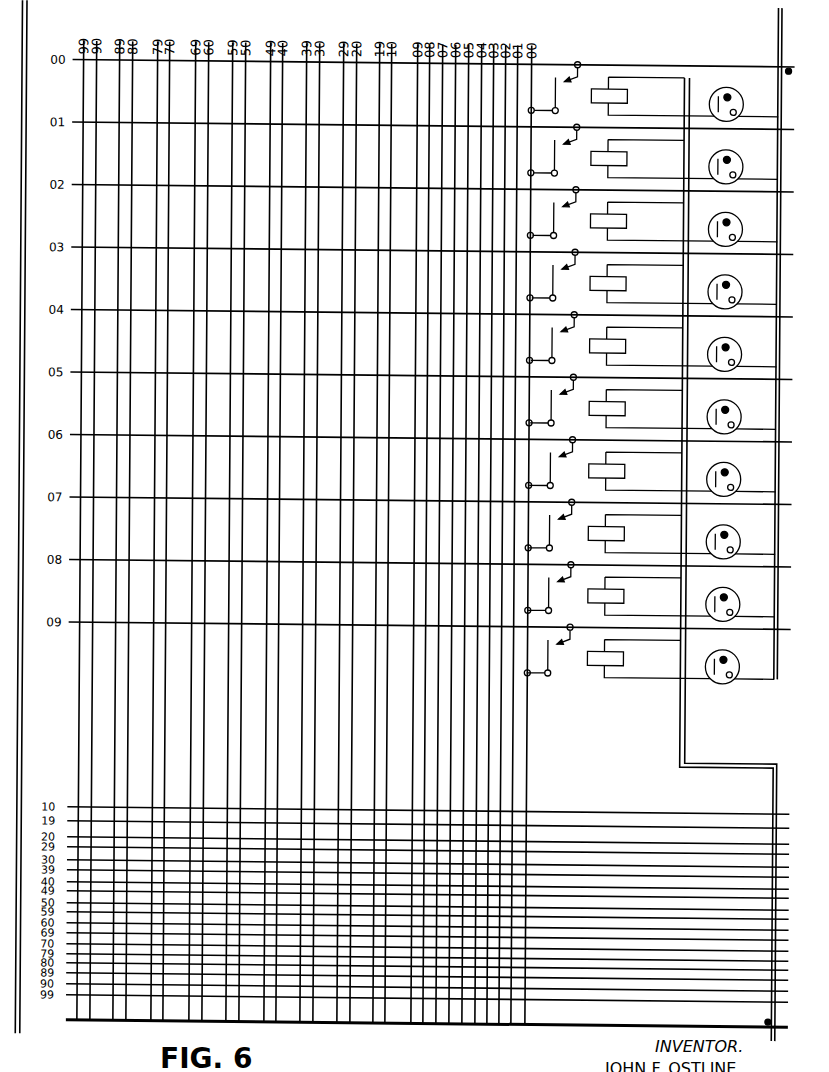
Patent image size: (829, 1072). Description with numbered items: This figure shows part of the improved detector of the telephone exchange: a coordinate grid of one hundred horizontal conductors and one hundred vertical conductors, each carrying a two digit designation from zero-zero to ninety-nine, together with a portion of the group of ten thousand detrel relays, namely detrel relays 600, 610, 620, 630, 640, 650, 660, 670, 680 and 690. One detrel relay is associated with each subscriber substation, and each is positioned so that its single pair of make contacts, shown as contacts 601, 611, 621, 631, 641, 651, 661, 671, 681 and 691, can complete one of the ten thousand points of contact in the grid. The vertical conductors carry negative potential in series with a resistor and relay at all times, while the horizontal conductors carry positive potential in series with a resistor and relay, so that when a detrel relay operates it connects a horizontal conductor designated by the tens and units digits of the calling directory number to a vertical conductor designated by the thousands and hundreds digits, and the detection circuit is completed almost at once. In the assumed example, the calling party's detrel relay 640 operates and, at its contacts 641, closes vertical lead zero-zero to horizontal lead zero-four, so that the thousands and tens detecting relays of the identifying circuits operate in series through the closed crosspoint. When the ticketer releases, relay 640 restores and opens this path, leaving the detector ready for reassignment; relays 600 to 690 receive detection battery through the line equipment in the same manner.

The detrel relay 600 is at (652, 96).
The make contacts of detrel relay 601 is at (559, 87).
The detrel relay 610 is at (652, 158).
The make contacts of detrel relay 611 is at (559, 150).
The detrel relay 620 is at (651, 221).
The make contacts of detrel relay 621 is at (557, 212).
The detrel relay 630 is at (651, 283).
The make contacts of detrel relay 631 is at (557, 275).
The detrel relay 640 is at (650, 346).
The contacts of detrel relay 641 is at (556, 337).
The detrel relay 650 is at (650, 408).
The make contacts of detrel relay 651 is at (556, 400).
The detrel relay 660 is at (650, 471).
The make contacts of detrel relay 661 is at (556, 462).
The detrel relay 670 is at (649, 533).
The make contacts of detrel relay 671 is at (554, 525).
The detrel relay 680 is at (649, 596).
The make contacts of detrel relay 681 is at (554, 587).
The detrel relay 690 is at (648, 658).
The make contacts of detrel relay 691 is at (553, 650).